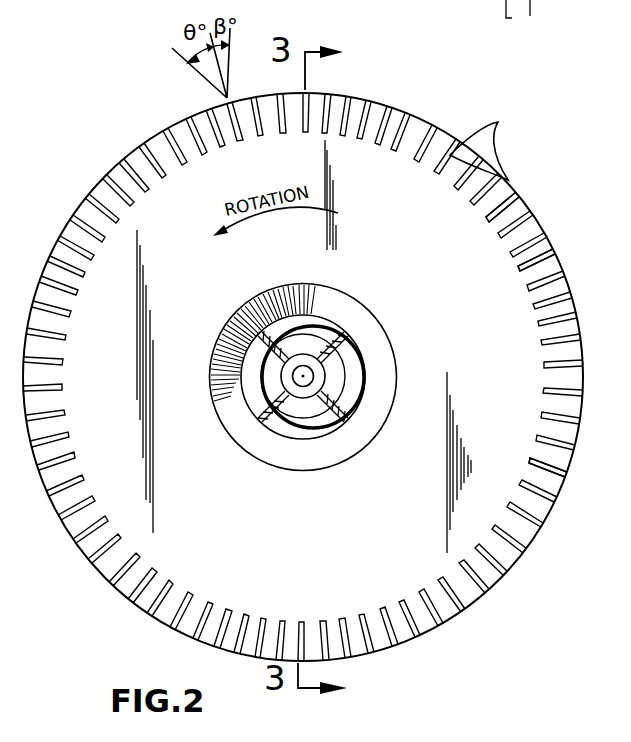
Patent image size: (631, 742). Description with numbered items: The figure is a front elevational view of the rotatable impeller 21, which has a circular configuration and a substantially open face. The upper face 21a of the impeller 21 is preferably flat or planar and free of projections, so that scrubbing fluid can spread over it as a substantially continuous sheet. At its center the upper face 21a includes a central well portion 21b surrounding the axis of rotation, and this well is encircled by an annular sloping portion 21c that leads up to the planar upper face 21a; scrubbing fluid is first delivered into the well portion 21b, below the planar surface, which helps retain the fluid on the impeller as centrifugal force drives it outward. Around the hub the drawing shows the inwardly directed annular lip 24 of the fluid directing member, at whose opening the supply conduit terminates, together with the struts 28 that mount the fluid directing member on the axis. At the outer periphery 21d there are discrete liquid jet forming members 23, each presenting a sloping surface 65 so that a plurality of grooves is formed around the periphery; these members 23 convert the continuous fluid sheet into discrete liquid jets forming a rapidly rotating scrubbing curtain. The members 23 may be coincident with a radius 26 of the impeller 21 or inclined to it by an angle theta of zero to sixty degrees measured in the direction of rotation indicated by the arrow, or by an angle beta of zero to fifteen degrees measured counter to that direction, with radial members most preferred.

The rotatable impeller 21 is at (528, 566).
The upper face 21a is at (458, 266).
The central well portion 21b is at (337, 362).
The annular sloping portion 21c is at (376, 404).
The outer periphery 21d is at (553, 275).
The liquid jet forming members 23 is at (487, 148).
The inwardly directed annular lip 24 is at (356, 372).
The radius 26 is at (213, 67).
The struts 28 is at (322, 350).
The sloping surface 65 is at (522, 215).